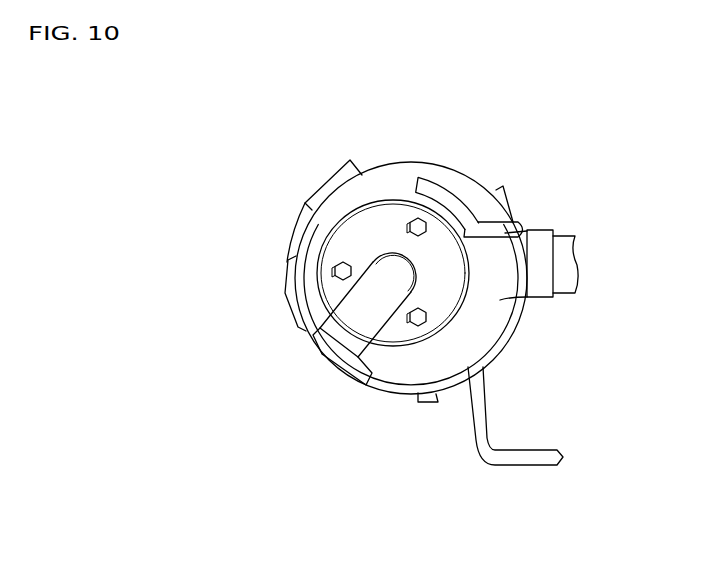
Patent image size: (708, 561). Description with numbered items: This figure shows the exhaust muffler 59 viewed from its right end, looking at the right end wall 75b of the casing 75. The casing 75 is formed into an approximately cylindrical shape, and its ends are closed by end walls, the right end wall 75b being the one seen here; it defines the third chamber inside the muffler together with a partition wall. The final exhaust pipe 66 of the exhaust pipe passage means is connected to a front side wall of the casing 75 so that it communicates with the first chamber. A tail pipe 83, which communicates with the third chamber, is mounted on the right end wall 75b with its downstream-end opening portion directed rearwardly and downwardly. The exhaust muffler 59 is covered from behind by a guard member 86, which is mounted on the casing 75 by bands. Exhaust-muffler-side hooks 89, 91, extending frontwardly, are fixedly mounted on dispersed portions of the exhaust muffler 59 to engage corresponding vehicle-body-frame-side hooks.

The exhaust muffler 59 is at (409, 150).
The casing 75 is at (463, 172).
The right end wall 75b is at (478, 328).
The exhaust-muffler-side hook 91 is at (497, 230).
The final exhaust pipe 66 is at (560, 247).
The tail pipe 83 is at (360, 322).
The guard member 86 is at (302, 327).
The exhaust-muffler-side hook 89 is at (527, 458).